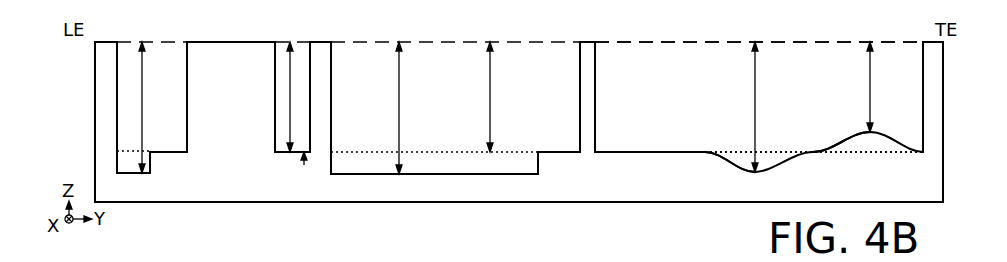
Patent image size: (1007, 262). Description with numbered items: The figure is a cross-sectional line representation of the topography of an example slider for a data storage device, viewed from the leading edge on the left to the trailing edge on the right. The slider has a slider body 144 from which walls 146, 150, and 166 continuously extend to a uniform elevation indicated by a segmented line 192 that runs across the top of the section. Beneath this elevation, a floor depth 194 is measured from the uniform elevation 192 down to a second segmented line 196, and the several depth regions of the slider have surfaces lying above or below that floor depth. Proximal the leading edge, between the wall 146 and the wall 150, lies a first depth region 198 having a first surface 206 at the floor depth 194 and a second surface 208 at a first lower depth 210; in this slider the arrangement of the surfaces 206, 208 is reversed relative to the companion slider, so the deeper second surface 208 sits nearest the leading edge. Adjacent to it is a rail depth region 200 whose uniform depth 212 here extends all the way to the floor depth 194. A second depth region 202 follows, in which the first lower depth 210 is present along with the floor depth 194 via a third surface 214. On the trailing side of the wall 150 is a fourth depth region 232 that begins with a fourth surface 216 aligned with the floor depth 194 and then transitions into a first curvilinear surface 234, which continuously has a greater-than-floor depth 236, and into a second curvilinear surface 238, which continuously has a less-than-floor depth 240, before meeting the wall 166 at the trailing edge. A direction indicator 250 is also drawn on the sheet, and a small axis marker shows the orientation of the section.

The slider body 144 is at (438, 197).
The wall 146 is at (95, 82).
The wall 150 is at (580, 82).
The wall 166 is at (923, 96).
The uniform elevation 192 is at (648, 45).
The floor depth 194 is at (490, 70).
The segmented line 196 is at (872, 153).
The first depth region 198 is at (202, 104).
The rail depth region 200 is at (302, 170).
The second depth region 202 is at (361, 42).
The first surface 206 is at (190, 153).
The second surface 208 is at (147, 174).
The first lower depth 210 is at (143, 64).
The uniform depth 212 is at (290, 73).
The third surface 214 is at (546, 154).
The fourth surface 216 is at (606, 153).
The fourth depth region 232 is at (688, 42).
The first curvilinear surface 234 is at (716, 158).
The greater-than-floor depth 236 is at (755, 103).
The second curvilinear surface 238 is at (848, 130).
The less-than-floor depth 240 is at (870, 67).
The flow direction 250 is at (243, 258).